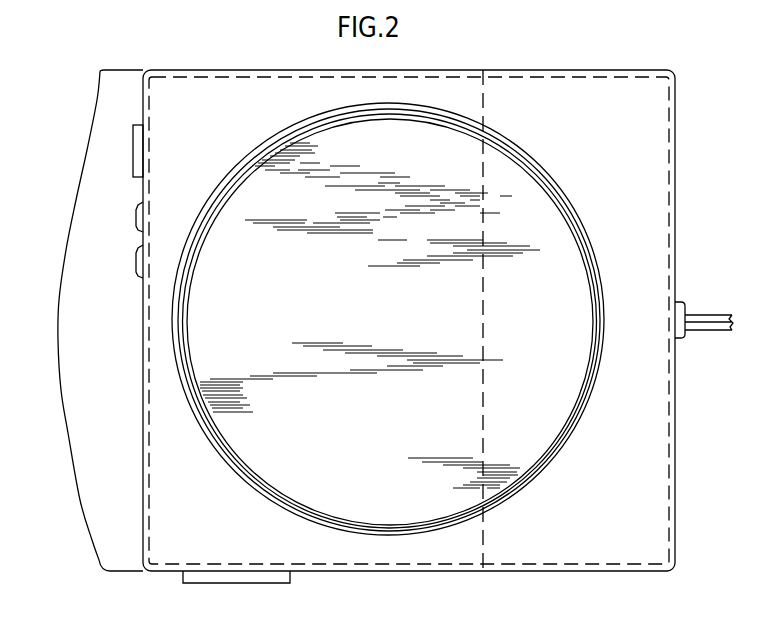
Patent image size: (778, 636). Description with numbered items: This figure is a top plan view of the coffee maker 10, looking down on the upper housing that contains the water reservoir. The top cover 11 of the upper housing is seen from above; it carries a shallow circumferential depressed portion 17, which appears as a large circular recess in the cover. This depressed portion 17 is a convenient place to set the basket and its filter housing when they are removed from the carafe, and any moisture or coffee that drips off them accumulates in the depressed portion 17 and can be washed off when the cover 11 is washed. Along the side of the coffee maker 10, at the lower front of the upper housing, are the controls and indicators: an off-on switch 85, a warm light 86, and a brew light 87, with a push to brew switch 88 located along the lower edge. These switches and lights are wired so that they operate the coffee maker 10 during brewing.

The coffee maker 10 is at (108, 133).
The top cover 11 is at (657, 256).
The shallow circumferential depressed portion 17 is at (517, 182).
The off-on switch 85 is at (133, 147).
The warm light 86 is at (136, 218).
The brew light 87 is at (136, 262).
The push to brew switch 88 is at (255, 583).